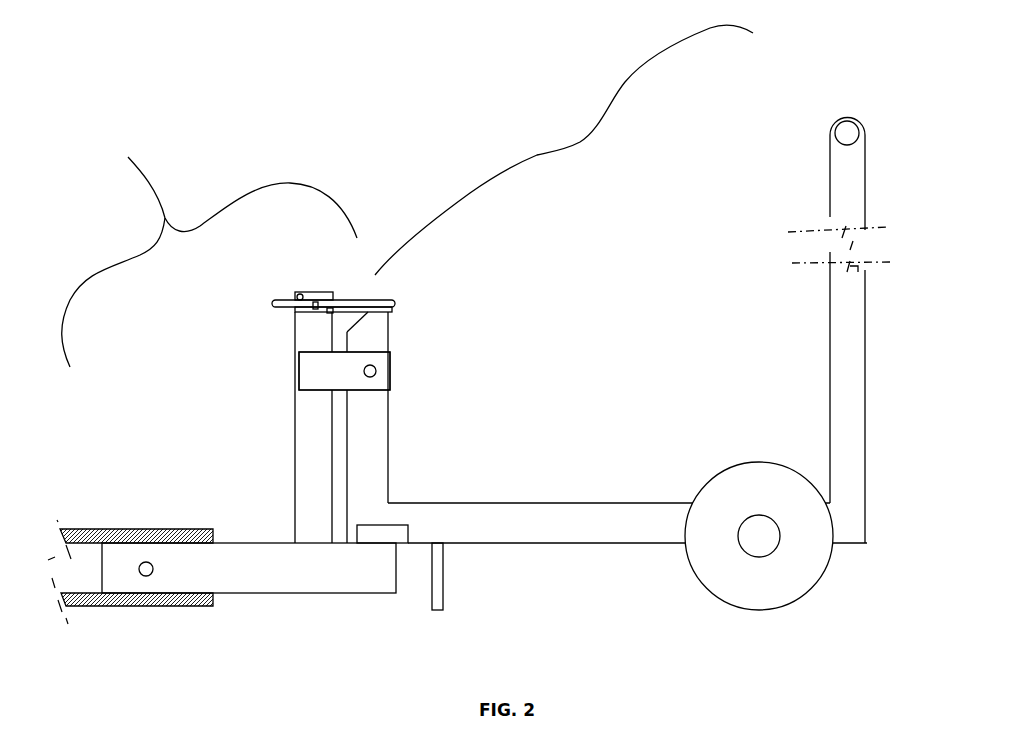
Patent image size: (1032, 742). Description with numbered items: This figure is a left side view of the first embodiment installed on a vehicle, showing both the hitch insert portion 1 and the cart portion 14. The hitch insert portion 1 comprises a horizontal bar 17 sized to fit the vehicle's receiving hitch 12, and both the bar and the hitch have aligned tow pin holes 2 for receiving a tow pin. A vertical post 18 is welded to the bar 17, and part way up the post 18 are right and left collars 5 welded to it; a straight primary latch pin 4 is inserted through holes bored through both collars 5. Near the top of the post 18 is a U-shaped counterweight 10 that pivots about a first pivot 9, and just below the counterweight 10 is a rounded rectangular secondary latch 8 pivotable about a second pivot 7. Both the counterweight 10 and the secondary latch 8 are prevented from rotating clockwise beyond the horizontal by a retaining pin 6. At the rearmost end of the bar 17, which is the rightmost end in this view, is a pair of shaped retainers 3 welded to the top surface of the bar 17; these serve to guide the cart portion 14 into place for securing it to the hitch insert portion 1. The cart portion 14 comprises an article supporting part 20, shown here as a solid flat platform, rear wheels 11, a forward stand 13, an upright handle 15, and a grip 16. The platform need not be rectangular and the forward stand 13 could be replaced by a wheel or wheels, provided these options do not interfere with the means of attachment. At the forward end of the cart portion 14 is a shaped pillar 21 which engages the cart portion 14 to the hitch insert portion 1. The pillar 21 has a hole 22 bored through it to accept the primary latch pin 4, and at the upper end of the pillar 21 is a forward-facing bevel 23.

The hitch insert portion 1 is at (134, 164).
The tow pin holes 2 is at (148, 564).
The shaped retainers 3 is at (383, 530).
The primary latch pin 4 is at (365, 373).
The collars 5 is at (310, 372).
The retaining pin 6 is at (330, 311).
The second pivot 7 is at (315, 309).
The secondary latch 8 is at (268, 301).
The first pivot 9 is at (298, 296).
The counterweight 10 is at (347, 300).
The rear wheels 11 is at (737, 462).
The receiving hitch 12 is at (178, 600).
The forward stand 13 is at (437, 575).
The cart portion 14 is at (537, 155).
The upright handle 15 is at (847, 330).
The grip 16 is at (850, 132).
The horizontal bar 17 is at (293, 568).
The vertical post 18 is at (307, 440).
The article supporting part 20 is at (510, 500).
The shaped pillar 21 is at (372, 410).
The hole 22 is at (377, 371).
The forward-facing bevel 23 is at (363, 320).